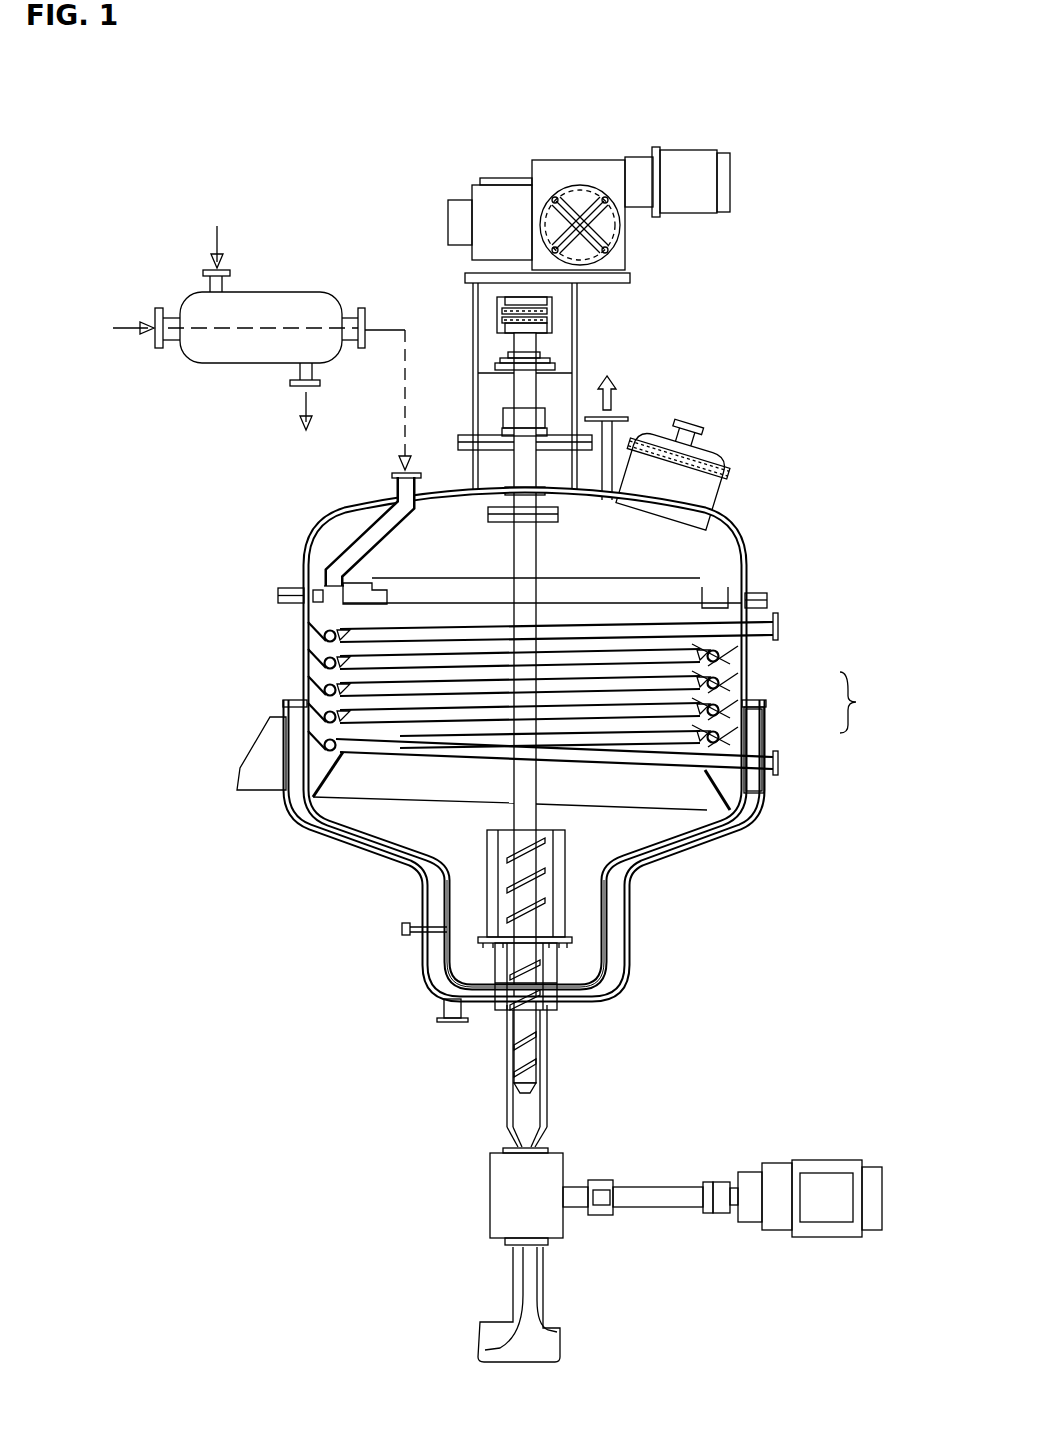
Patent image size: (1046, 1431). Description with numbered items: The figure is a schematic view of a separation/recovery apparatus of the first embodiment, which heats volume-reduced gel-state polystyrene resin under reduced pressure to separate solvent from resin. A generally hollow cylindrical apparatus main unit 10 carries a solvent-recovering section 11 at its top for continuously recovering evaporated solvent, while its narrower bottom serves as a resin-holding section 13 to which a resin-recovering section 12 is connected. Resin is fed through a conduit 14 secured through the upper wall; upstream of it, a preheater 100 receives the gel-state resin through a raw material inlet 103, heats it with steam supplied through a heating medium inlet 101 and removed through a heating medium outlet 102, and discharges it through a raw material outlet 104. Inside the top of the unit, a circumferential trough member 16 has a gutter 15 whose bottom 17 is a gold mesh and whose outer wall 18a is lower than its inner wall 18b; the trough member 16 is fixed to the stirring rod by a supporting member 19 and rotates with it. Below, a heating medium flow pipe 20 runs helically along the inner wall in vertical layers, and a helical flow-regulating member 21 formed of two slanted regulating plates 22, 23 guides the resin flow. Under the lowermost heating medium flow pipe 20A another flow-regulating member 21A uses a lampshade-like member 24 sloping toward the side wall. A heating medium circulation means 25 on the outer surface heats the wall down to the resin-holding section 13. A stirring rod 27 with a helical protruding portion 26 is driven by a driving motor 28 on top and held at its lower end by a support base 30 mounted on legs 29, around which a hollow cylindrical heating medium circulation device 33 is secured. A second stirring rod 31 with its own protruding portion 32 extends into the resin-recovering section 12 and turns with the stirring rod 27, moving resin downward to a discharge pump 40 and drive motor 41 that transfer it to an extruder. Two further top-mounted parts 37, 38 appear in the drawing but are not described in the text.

The apparatus main unit 10 is at (510, 738).
The solvent-recovering section 11 is at (638, 407).
The resin-recovering section 12 is at (533, 1113).
The resin-holding section 13 is at (626, 978).
The conduit 14 is at (320, 513).
The gutter 15 is at (343, 585).
The trough member 16 is at (308, 627).
The bottom 17 is at (300, 613).
The outer wall 18a is at (317, 592).
The inner wall 18b is at (380, 552).
The supporting member 19 is at (458, 590).
The heating medium flow pipe 20 is at (648, 628).
The heating medium flow pipe forming the lowermost layer 20A is at (676, 772).
The flow-regulating member 21 is at (600, 734).
The flow-regulating member 21A is at (754, 750).
The regulating plate 22 is at (735, 668).
The regulating plate 23 is at (722, 672).
The lampshade-like member 24 is at (754, 790).
The heating medium circulation means 25 is at (307, 837).
The protruding portion 26 is at (495, 888).
The stirring rod 27 is at (520, 803).
The driving motor 28 is at (533, 337).
The legs 29 is at (572, 998).
The support base 30 is at (435, 950).
The second stirring rod 31 is at (532, 976).
The protruding portion 32 is at (520, 1040).
The heating medium circulation device 33 is at (585, 940).
The sight glass 37 is at (722, 465).
The small valve 38 is at (706, 420).
The discharge pump 40 is at (495, 1210).
The drive motor 41 is at (777, 1222).
The preheater 100 is at (286, 305).
The heating medium inlet 101 is at (228, 284).
The heating medium outlet 102 is at (292, 372).
The raw material inlet 103 is at (168, 316).
The raw material outlet 104 is at (348, 314).